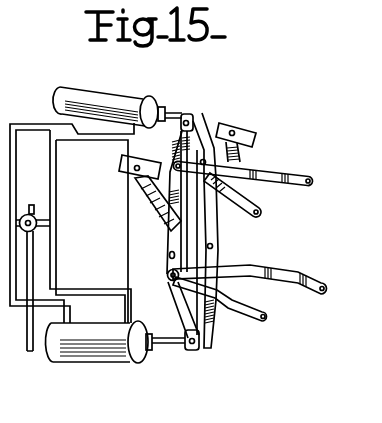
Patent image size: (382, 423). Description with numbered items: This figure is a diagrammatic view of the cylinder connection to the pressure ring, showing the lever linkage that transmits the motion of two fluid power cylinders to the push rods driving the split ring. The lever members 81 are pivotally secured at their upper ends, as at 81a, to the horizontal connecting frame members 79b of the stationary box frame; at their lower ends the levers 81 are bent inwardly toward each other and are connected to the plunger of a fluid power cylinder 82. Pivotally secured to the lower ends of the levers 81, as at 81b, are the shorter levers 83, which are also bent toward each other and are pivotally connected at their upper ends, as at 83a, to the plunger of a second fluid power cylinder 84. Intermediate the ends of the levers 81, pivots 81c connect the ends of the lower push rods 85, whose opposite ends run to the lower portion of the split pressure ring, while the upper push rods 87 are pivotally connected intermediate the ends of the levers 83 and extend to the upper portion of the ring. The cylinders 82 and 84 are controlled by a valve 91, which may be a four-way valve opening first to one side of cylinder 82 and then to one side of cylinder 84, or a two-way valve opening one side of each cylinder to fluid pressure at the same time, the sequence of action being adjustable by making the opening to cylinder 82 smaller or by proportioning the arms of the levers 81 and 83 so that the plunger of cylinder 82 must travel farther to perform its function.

The fluid power cylinder 84 is at (124, 98).
The fluid power cylinder 82 is at (90, 348).
The valve 91 is at (30, 205).
The shorter lever 83 is at (182, 141).
The pivot 83a is at (202, 113).
The lever member 81 is at (140, 198).
The pivot 81a is at (121, 160).
The pivot 81b is at (168, 257).
The pivot 81c is at (167, 276).
The horizontal connecting frame member 79b is at (134, 175).
The lower push rod 85 is at (247, 322).
The upper push rod 87 is at (275, 165).